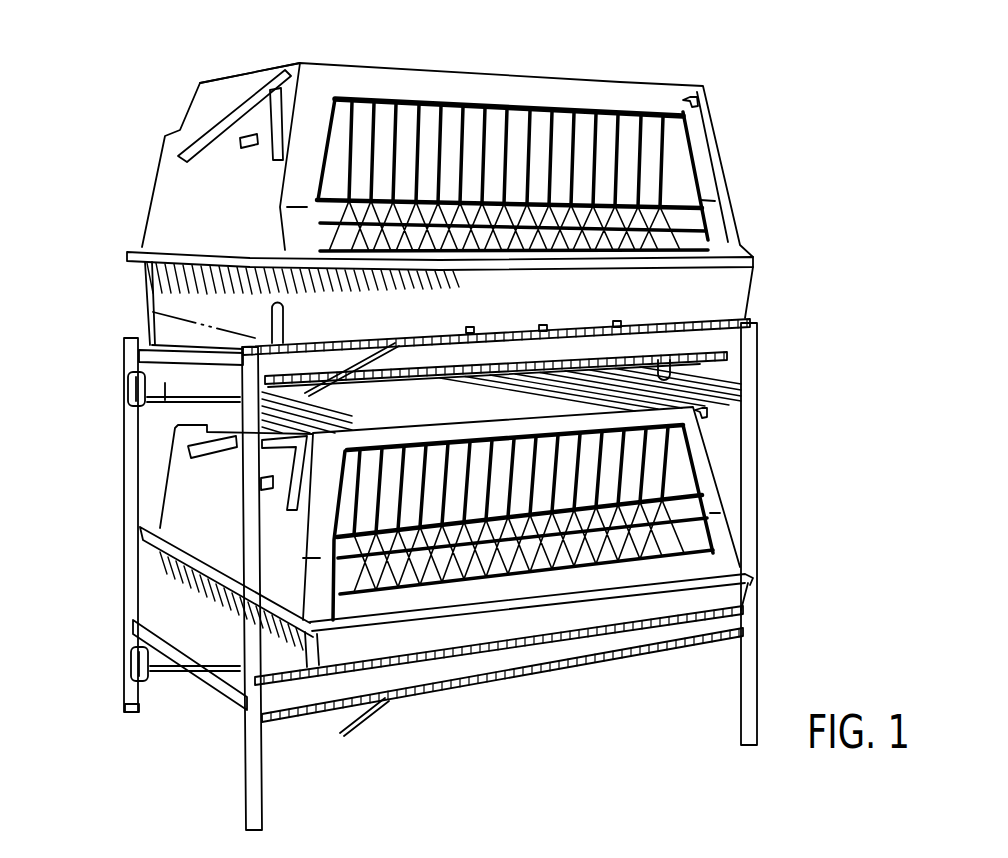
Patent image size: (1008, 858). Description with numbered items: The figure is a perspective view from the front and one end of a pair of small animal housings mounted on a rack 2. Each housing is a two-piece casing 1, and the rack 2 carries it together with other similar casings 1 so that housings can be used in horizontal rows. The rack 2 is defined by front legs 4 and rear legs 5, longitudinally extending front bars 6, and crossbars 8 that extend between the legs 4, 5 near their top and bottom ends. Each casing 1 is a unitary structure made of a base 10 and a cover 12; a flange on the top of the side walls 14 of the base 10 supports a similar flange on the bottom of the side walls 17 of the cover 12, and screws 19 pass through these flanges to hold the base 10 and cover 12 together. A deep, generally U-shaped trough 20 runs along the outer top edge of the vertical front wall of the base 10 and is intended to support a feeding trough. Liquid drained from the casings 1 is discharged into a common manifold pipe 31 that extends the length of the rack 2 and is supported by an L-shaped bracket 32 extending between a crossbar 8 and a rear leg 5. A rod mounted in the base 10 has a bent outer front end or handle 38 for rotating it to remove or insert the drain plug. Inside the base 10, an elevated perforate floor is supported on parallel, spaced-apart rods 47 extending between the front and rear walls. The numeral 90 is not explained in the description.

The casing 1 is at (742, 55).
The rack 2 is at (125, 338).
The front leg 4 is at (263, 803).
The rear leg 5 is at (131, 718).
The front bar 6 is at (740, 320).
The crossbar 8 is at (140, 333).
The base 10 is at (465, 341).
The cover 12 is at (705, 158).
The side wall 14 is at (160, 288).
The side wall 17 is at (168, 182).
The screw 19 is at (177, 257).
The trough 20 is at (682, 305).
The pipe 31 is at (165, 413).
The L-shaped bracket 32 is at (133, 413).
The handle 38 is at (365, 397).
The rod 47 is at (470, 330).
The hood latch 90 is at (697, 93).